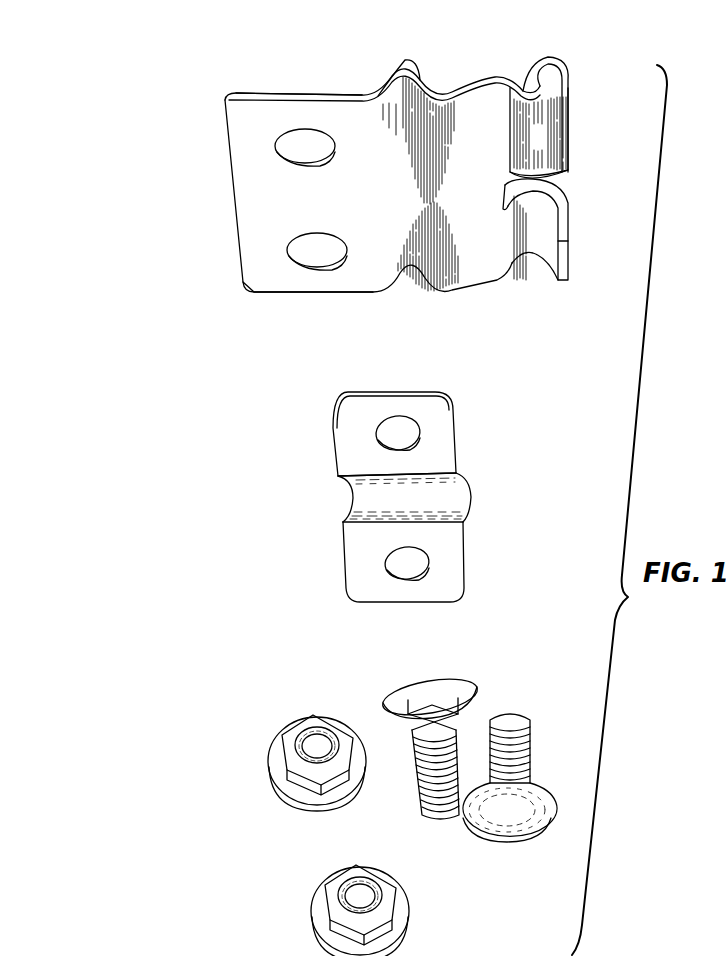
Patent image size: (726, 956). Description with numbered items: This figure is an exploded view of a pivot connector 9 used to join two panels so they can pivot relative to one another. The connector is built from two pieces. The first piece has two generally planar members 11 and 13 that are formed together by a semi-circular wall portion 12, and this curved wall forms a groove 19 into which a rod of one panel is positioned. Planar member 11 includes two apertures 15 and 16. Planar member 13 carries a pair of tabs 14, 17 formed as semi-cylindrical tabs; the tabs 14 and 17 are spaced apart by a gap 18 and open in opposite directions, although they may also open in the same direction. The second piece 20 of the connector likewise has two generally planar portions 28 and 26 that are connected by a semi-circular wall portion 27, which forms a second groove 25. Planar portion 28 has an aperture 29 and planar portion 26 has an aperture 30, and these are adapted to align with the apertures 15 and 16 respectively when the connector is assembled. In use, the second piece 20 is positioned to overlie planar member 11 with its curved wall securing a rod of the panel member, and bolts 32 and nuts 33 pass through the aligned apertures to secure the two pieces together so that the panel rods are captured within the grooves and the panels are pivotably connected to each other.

The pivot connector 9 is at (205, 217).
The planar member 11 is at (300, 96).
The semi-circular wall portion 12 is at (392, 77).
The planar member 13 is at (468, 88).
The tab 14 is at (566, 68).
The aperture 15 is at (297, 143).
The aperture 16 is at (307, 247).
The tab 17 is at (562, 200).
The gap 18 is at (565, 178).
The groove 19 is at (330, 231).
The second piece 20 is at (452, 374).
The second groove 25 is at (350, 500).
The planar portion 26 is at (440, 604).
The semi-circular wall portion 27 is at (460, 500).
The planar portion 28 is at (353, 392).
The aperture 29 is at (410, 436).
The aperture 30 is at (400, 562).
The bolt 32 is at (402, 688).
The nut 33 is at (312, 805).